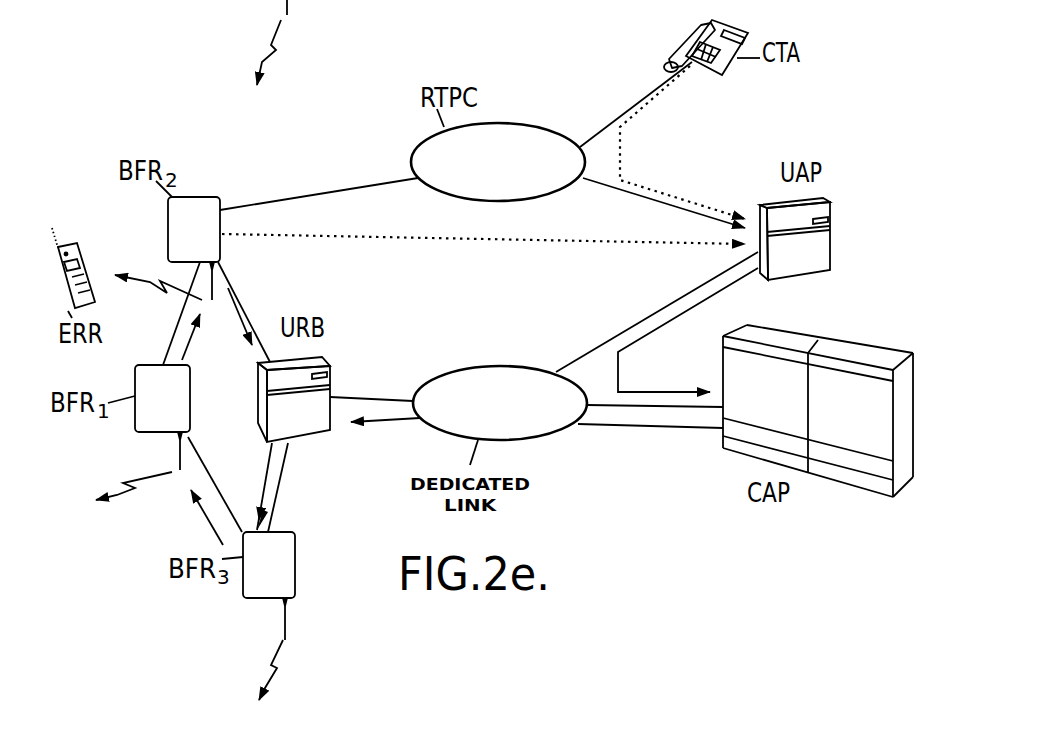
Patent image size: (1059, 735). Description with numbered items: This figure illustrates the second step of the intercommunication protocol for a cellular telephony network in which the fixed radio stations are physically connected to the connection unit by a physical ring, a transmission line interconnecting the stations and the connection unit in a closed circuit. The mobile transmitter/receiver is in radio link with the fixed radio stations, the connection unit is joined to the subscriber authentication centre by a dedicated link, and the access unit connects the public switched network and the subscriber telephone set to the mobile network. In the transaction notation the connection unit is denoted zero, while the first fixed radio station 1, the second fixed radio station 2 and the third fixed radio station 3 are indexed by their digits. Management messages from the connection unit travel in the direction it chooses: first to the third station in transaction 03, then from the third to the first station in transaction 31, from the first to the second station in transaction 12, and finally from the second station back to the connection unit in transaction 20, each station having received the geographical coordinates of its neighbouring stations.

The first fixed radio station 1 is at (682, 142).
The second fixed radio station 2 is at (688, 330).
The third fixed radio station 3 is at (483, 348).
The transaction 1-2 12 is at (205, 337).
The transaction 2-0 20 is at (246, 310).
The transaction 3-1 31 is at (185, 517).
The transaction 0-3 03 is at (287, 487).